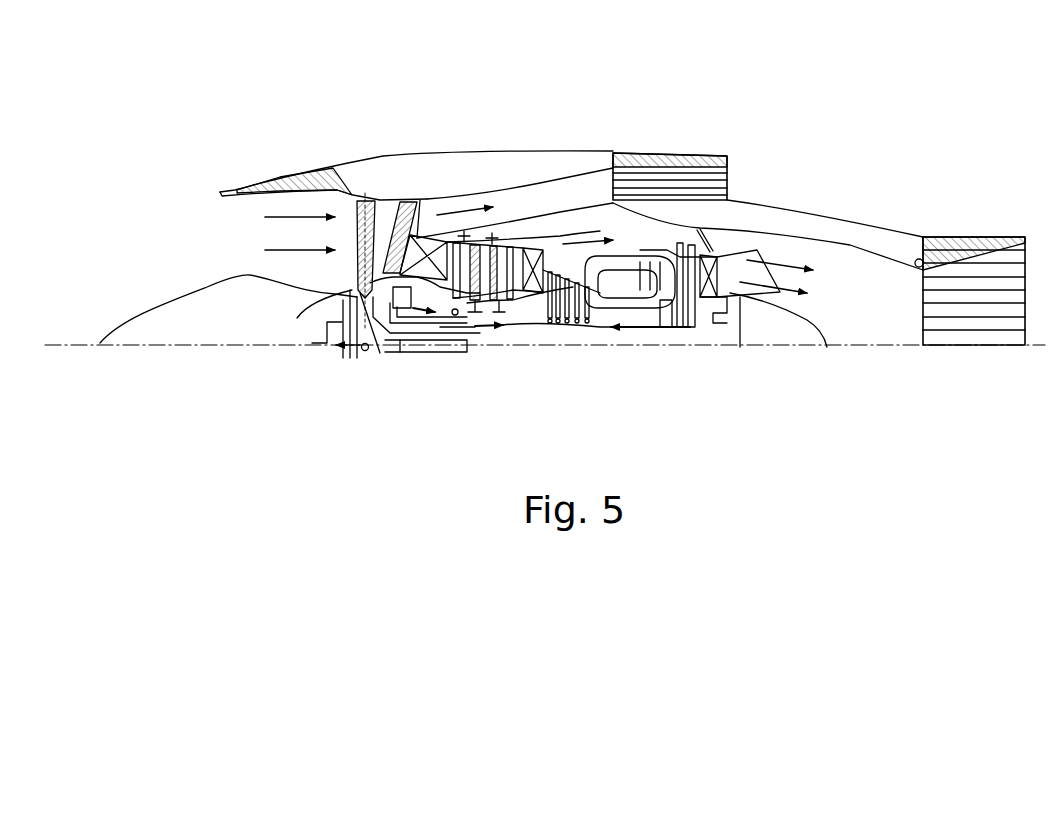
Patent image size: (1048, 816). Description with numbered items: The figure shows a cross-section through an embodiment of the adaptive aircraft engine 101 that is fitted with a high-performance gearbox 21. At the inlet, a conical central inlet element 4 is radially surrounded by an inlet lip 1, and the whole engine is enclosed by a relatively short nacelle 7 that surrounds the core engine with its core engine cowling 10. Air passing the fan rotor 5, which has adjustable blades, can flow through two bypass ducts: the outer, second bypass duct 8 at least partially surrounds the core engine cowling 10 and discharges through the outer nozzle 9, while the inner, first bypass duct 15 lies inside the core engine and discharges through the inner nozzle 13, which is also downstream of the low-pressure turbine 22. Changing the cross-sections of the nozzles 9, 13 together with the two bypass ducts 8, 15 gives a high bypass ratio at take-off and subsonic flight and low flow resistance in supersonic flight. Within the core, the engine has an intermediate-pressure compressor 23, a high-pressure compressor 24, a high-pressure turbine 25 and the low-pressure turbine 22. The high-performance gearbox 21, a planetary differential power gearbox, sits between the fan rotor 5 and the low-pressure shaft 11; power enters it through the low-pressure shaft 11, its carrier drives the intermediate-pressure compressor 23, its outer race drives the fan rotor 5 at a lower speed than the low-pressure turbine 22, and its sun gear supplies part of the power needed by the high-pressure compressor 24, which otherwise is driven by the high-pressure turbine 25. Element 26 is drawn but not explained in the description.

The adaptive aircraft engine 101 is at (757, 84).
The inlet lip 1 is at (303, 173).
The conical central inlet element 4 is at (125, 333).
The fan rotor 5 is at (343, 330).
The nacelle 7 is at (381, 156).
The outer bypass duct 8 is at (520, 190).
The outer nozzle 9 is at (670, 155).
The core engine cowling 10 is at (837, 210).
The low-pressure shaft 11 is at (585, 325).
The inner nozzle 13 is at (1007, 237).
The inner bypass duct 15 is at (653, 243).
The high-performance gearbox 21 is at (410, 330).
The low-pressure turbine 22 is at (680, 300).
The intermediate-pressure compressor 23 is at (473, 320).
The high-pressure compressor 24 is at (560, 310).
The high-pressure turbine 25 is at (667, 300).
The turbine 26 is at (687, 300).